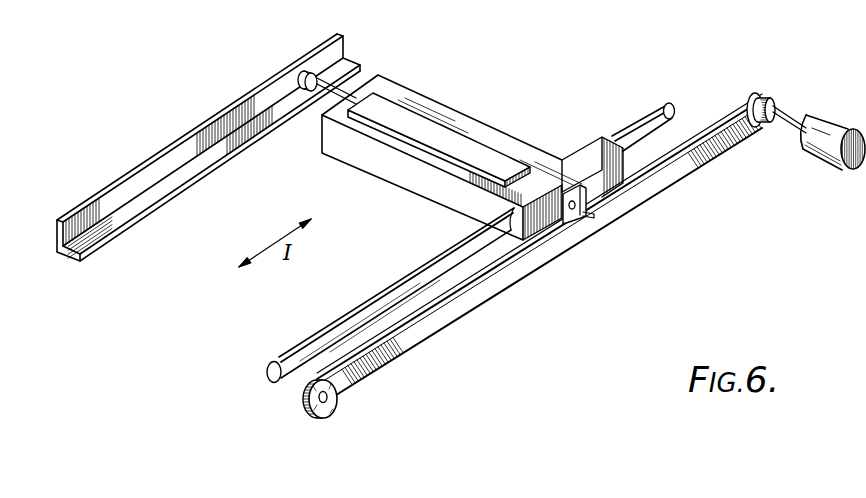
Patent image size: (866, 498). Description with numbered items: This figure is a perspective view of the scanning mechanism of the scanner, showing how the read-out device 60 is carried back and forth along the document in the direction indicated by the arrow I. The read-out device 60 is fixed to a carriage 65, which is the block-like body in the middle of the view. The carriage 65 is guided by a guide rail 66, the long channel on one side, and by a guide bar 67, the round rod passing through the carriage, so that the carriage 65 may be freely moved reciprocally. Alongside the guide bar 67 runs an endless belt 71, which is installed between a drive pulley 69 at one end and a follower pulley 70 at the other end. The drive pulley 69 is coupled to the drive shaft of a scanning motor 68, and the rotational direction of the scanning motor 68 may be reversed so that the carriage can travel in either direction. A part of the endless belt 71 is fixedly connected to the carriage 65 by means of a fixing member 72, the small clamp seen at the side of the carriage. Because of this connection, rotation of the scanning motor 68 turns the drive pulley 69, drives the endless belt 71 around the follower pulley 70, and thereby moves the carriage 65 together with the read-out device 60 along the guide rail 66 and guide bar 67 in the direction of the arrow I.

The read-out device 60 is at (425, 125).
The carriage 65 is at (493, 137).
The guide rail 66 is at (217, 112).
The guide bar 67 is at (636, 125).
The scanning motor 68 is at (818, 155).
The drive pulley 69 is at (771, 103).
The follower pulley 70 is at (326, 411).
The endless belt 71 is at (512, 288).
The fixing member 72 is at (591, 216).